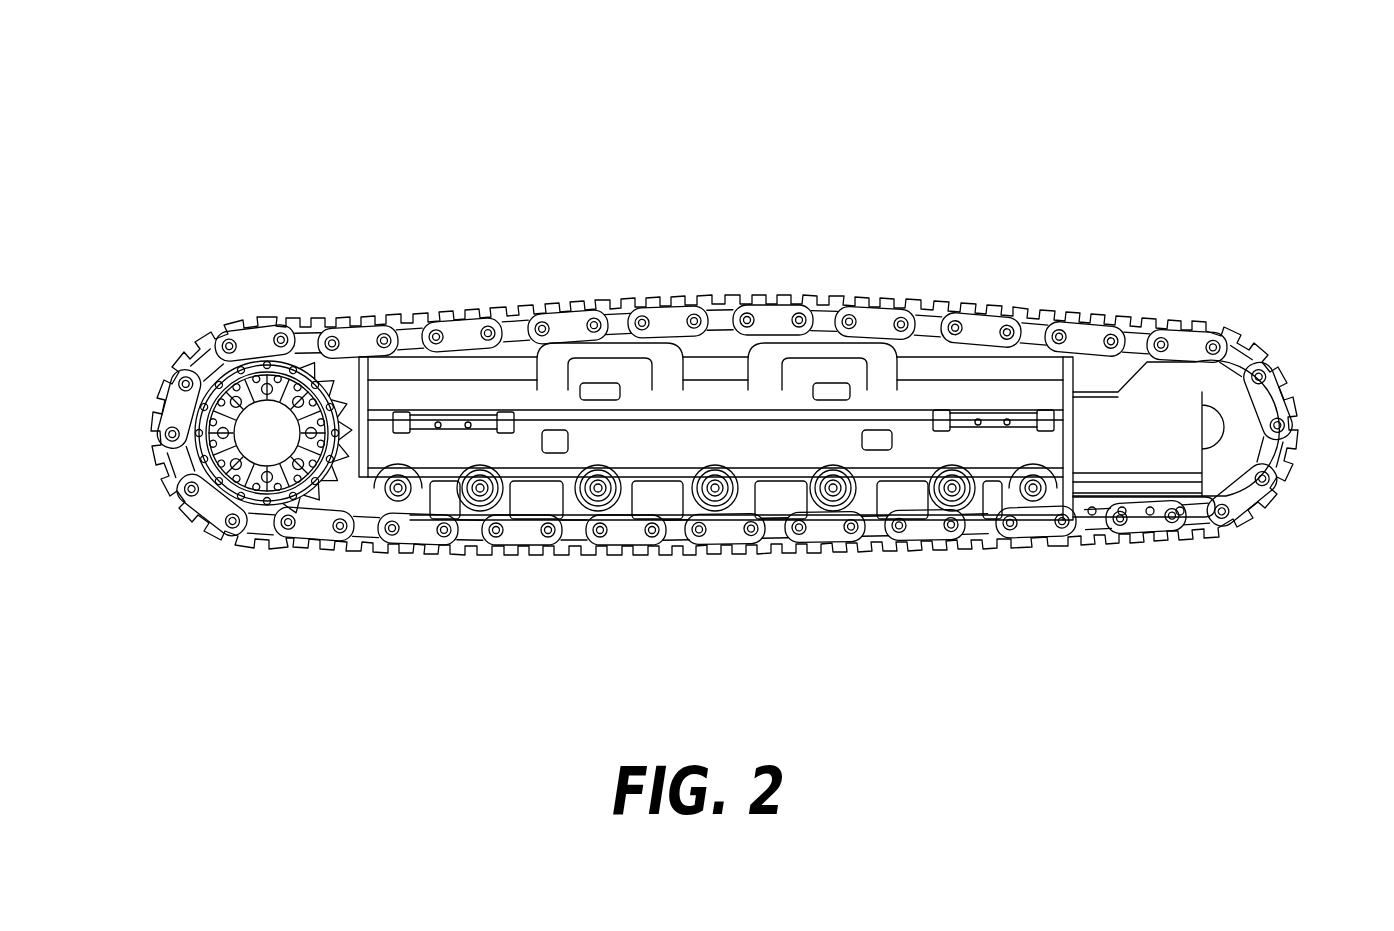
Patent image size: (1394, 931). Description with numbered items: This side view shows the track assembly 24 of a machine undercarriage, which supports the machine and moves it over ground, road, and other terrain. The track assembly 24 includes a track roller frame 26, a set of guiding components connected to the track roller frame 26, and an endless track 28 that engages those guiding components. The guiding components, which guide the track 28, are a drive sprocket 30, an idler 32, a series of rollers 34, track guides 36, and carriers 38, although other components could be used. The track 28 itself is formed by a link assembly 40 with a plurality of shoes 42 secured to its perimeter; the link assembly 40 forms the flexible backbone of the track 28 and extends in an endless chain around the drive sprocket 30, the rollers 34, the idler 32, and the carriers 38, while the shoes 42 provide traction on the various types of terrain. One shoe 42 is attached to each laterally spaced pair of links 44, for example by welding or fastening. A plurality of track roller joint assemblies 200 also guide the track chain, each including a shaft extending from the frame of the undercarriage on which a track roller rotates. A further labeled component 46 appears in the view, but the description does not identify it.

The track assembly 24 is at (1146, 106).
The track roller frame 26 is at (625, 432).
The endless track 28 is at (1140, 320).
The drive sprocket 30 is at (265, 433).
The idler 32 is at (1232, 450).
The rollers 34 is at (402, 508).
The track guides 36 is at (537, 502).
The carriers 38 is at (550, 372).
The link assembly 40 is at (405, 333).
The track shoes 42 is at (728, 302).
The links 44 is at (263, 345).
The track pin 46 is at (295, 540).
The track roller joint assemblies 200 is at (732, 502).